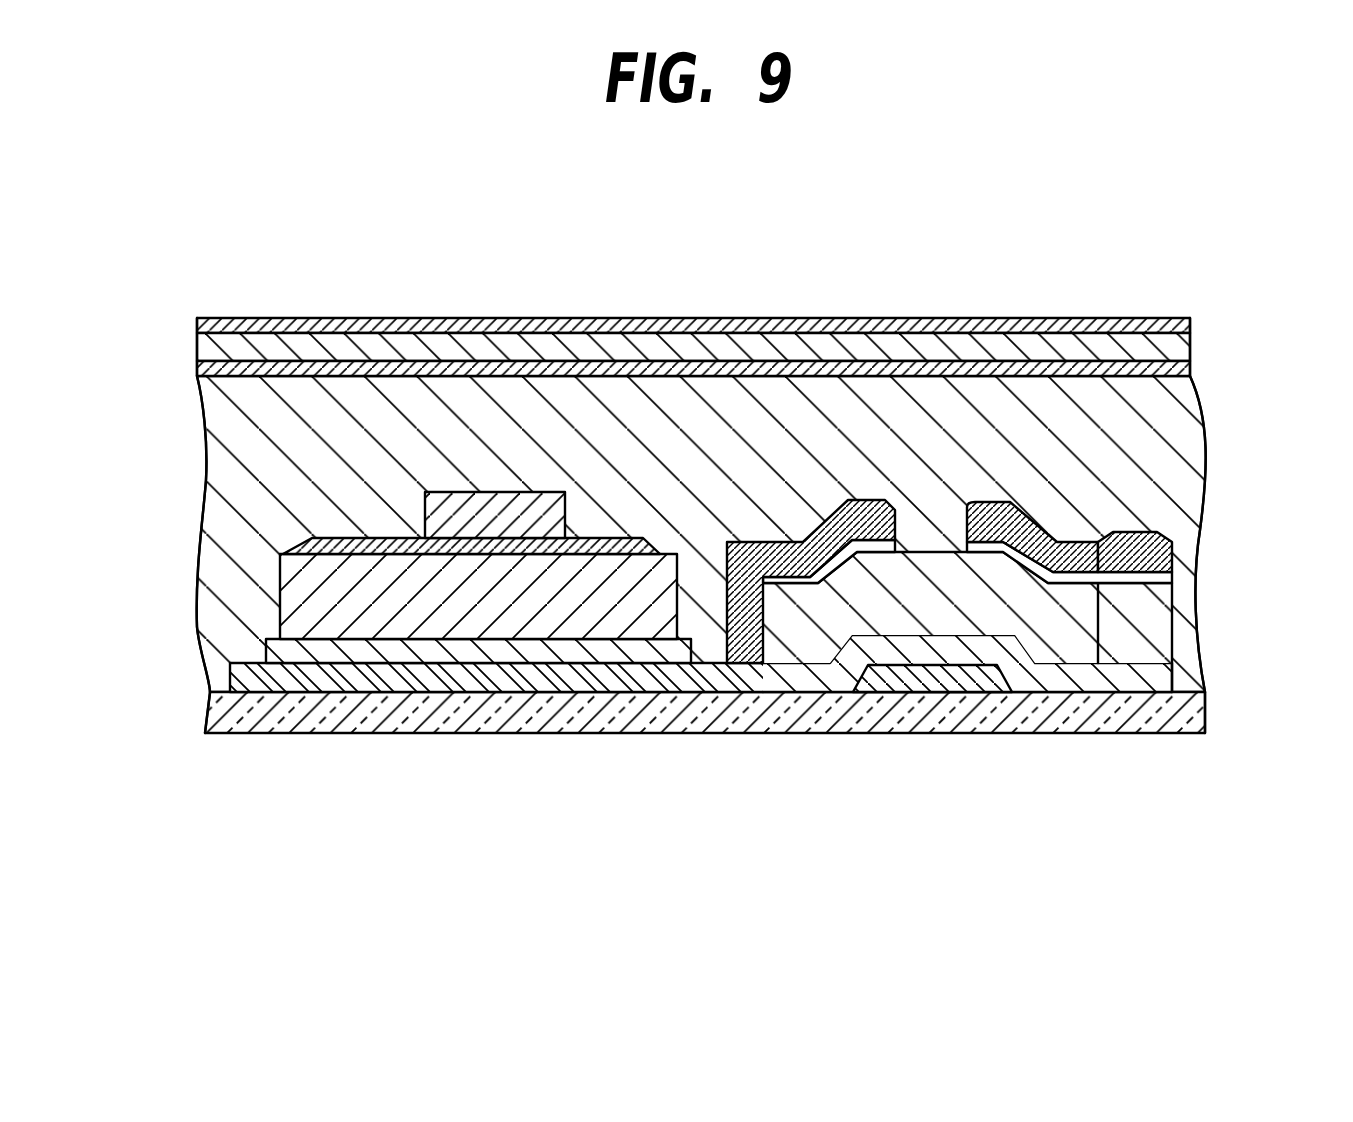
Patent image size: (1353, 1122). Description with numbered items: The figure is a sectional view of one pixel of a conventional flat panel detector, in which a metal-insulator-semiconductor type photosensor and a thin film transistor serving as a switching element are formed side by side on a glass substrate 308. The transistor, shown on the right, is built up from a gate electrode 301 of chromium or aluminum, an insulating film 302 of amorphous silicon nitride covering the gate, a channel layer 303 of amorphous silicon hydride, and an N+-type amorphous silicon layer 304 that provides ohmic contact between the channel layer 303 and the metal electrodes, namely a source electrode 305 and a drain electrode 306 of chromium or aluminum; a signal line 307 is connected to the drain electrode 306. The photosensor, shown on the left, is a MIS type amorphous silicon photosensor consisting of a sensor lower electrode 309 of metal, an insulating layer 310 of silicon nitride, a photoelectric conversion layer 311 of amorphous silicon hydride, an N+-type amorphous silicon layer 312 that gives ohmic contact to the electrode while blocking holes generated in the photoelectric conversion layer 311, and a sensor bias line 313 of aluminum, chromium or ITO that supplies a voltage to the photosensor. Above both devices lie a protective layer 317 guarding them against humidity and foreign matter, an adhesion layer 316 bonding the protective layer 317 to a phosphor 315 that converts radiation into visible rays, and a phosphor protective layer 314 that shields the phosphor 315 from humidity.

The gate electrode 301 is at (868, 665).
The insulating film 302 is at (927, 655).
The channel layer 303 is at (957, 620).
The N+-type amorphous silicon layer 304 is at (884, 508).
The source electrode 305 is at (847, 500).
The drain electrode 306 is at (1033, 510).
The signal line 307 is at (1172, 547).
The glass substrate 308 is at (597, 717).
The sensor lower electrode 309 is at (257, 680).
The insulating layer 310 is at (357, 657).
The photoelectric conversion layer 311 is at (293, 605).
The N+-type amorphous silicon layer 312 is at (347, 536).
The sensor bias line 313 is at (490, 505).
The phosphor protective layer 314 is at (250, 318).
The phosphor 315 is at (397, 342).
The adhesion layer 316 is at (733, 362).
The protective layer 317 is at (800, 405).